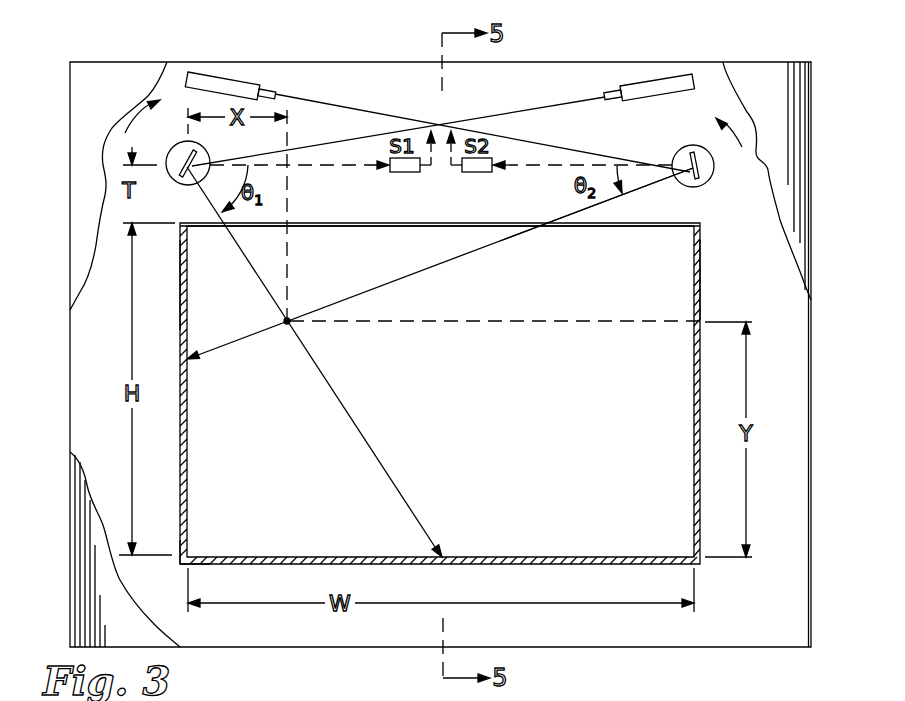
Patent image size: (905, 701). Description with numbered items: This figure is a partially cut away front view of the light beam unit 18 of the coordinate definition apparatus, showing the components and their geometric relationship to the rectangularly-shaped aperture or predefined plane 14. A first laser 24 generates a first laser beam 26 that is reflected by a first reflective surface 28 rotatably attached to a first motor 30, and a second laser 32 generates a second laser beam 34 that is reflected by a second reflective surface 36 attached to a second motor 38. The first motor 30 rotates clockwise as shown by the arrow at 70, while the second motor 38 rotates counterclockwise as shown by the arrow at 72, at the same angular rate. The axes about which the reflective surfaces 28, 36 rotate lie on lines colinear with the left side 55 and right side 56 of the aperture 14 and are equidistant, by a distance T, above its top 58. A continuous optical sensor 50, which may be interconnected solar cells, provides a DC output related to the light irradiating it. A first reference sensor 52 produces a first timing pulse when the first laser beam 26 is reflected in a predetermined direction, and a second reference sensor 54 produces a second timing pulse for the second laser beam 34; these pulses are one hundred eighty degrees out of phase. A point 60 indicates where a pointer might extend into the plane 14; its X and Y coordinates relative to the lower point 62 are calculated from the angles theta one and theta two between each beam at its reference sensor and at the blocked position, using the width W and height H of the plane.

The predefined plane 14 is at (431, 377).
The light beam unit 18 is at (822, 278).
The first laser 24 is at (628, 80).
The first laser beam 26 is at (562, 105).
The first reflective surface 28 is at (186, 180).
The first motor 30 is at (186, 142).
The second laser 32 is at (238, 78).
The second laser beam 34 is at (340, 107).
The second reflective surface 36 is at (683, 183).
The second motor 38 is at (700, 147).
The continuous optical sensor 50 is at (187, 465).
The first reference sensor 52 is at (413, 172).
The second reference sensor 54 is at (466, 172).
The left side 55 is at (180, 300).
The right side 56 is at (700, 280).
The top 58 is at (592, 228).
The point 60 is at (285, 327).
The lower point 62 is at (188, 552).
The arrow 70 is at (137, 117).
The arrow 72 is at (732, 125).